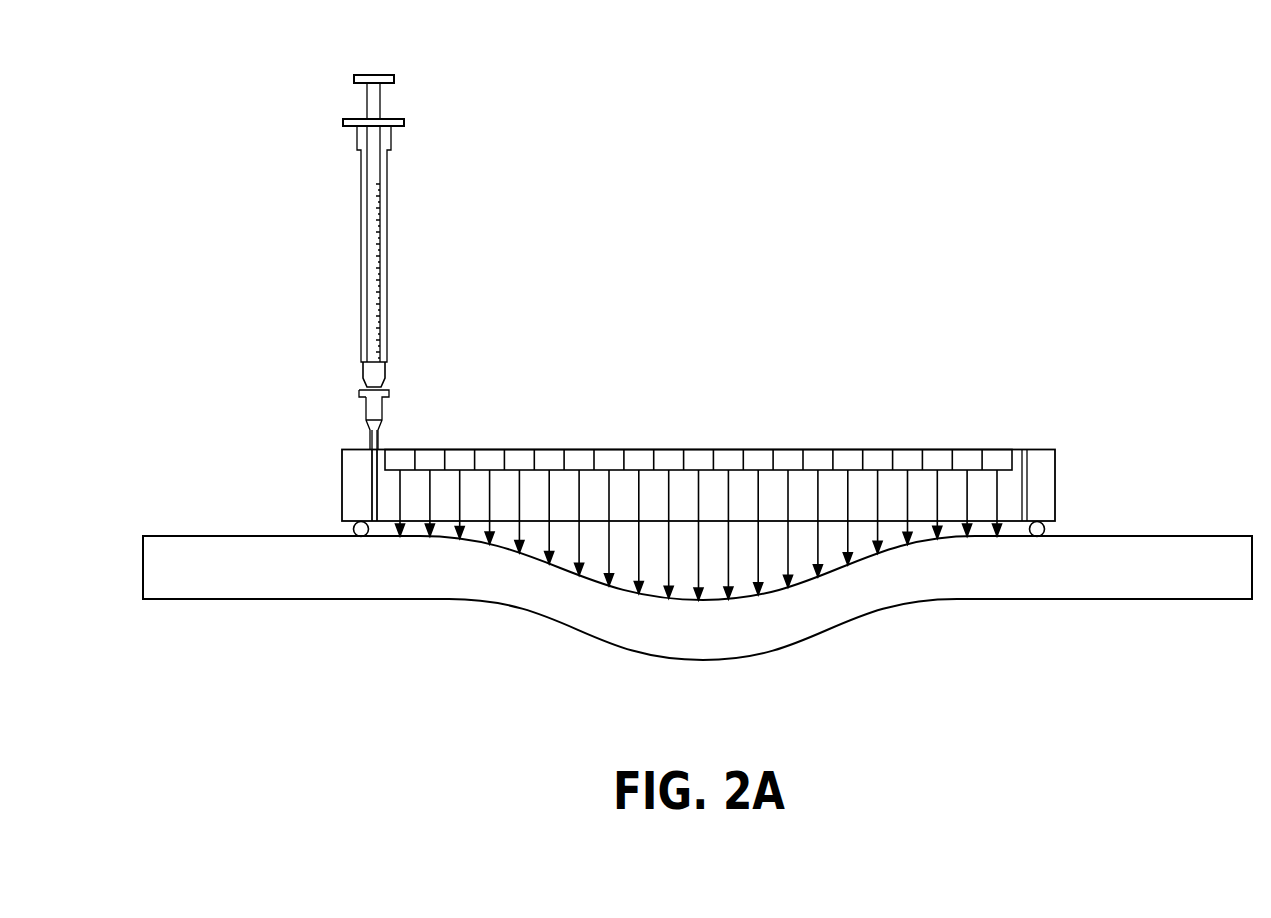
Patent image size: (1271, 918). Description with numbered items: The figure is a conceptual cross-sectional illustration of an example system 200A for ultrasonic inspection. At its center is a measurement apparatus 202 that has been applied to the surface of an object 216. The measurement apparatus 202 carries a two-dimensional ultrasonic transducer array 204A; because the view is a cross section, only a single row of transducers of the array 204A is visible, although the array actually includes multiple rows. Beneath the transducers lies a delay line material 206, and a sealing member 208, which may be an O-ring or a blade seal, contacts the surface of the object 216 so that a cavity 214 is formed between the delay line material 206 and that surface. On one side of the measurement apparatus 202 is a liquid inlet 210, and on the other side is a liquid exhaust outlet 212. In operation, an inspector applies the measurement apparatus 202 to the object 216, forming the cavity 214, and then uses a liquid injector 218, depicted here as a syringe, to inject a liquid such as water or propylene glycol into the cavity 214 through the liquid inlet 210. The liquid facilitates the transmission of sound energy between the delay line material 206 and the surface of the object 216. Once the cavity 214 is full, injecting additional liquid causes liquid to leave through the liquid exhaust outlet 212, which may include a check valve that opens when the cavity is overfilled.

The example system 200A is at (166, 70).
The measurement apparatus 202 is at (314, 418).
The two-dimensional ultrasonic transducer array 204A is at (789, 447).
The delay line material 206 is at (1042, 500).
The sealing member 208 is at (352, 532).
The liquid inlet 210 is at (372, 485).
The liquid exhaust outlet 212 is at (1030, 462).
The cavity 214 is at (763, 576).
The object 216 is at (1153, 535).
The liquid injector 218 is at (386, 180).